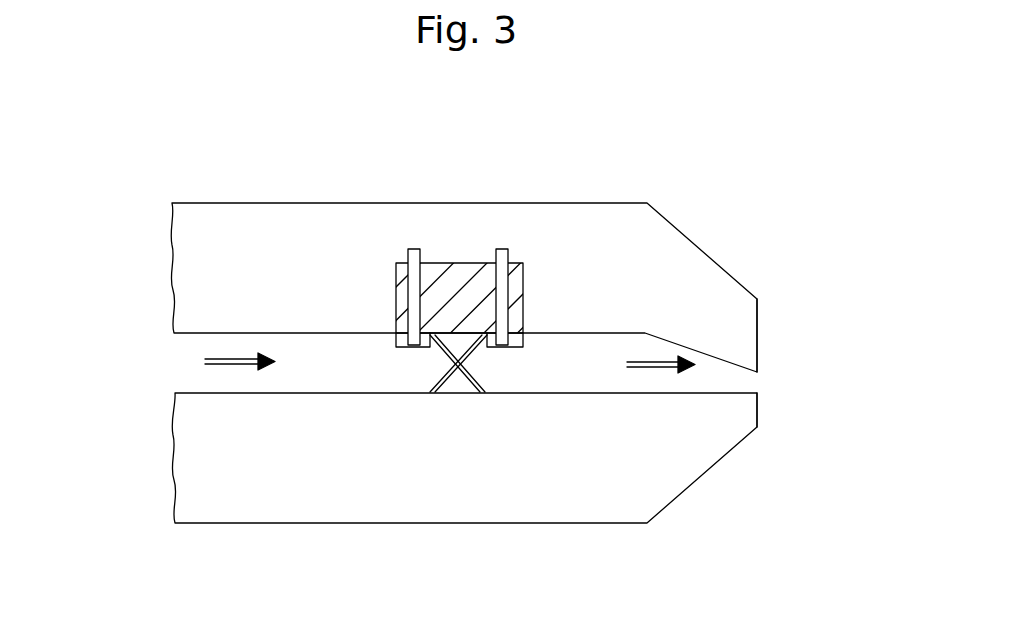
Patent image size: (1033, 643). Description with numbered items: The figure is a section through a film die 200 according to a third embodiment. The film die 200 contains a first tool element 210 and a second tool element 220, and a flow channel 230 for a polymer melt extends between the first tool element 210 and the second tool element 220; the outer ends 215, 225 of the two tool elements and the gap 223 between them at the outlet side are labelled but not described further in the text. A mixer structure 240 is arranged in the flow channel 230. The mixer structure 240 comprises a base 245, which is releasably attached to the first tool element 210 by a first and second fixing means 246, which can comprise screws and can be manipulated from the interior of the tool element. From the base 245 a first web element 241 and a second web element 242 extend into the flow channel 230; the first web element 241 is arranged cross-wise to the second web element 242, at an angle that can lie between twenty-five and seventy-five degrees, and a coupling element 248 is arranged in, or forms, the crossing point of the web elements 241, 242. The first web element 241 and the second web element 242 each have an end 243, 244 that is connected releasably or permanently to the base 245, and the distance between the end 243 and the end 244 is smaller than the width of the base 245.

The film die 200 is at (717, 211).
The first tool element 210 is at (207, 293).
The first wall end face 215 is at (760, 338).
The second tool element 220 is at (205, 404).
The outlet gap 223 is at (758, 380).
The second wall end face 225 is at (759, 413).
The flow channel 230 is at (346, 362).
The mixer structure 240 is at (475, 339).
The first web element 241 is at (445, 380).
The second web element 242 is at (463, 375).
The end of the first web element 243 is at (430, 340).
The end of the second web element 244 is at (487, 345).
The base 245 is at (447, 295).
The fixing means 246 is at (413, 297).
The coupling element 248 is at (456, 366).